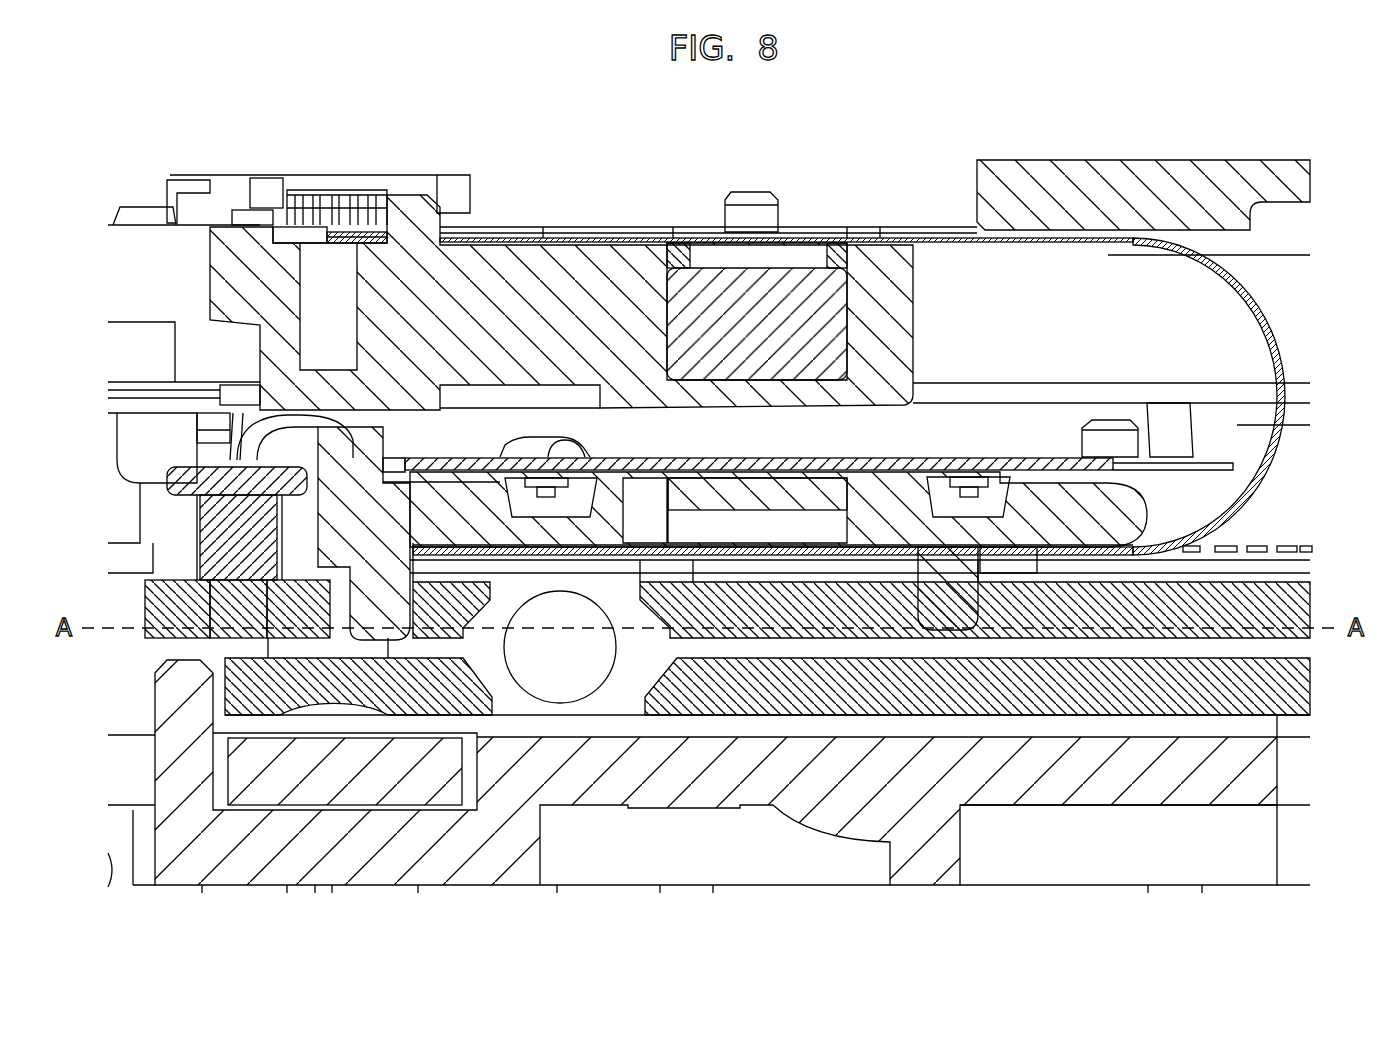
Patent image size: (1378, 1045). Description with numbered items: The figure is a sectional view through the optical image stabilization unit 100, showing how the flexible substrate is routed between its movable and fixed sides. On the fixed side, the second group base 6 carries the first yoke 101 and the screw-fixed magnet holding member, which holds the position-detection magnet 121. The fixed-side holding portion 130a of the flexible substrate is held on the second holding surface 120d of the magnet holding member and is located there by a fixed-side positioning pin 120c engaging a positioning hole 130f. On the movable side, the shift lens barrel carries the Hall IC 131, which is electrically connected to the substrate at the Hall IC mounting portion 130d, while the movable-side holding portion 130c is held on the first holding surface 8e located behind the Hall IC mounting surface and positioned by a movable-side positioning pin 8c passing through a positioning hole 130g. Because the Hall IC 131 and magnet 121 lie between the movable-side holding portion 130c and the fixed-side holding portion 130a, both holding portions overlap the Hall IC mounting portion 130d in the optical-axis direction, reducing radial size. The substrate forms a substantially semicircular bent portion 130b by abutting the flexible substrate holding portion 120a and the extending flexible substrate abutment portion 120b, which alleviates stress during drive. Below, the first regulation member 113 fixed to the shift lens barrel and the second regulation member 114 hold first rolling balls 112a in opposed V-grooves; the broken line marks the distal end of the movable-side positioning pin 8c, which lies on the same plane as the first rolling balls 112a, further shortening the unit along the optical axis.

The optical image stabilization unit 100 is at (135, 124).
The positioning hole 130f is at (355, 240).
The fixed-side positioning pin 120c is at (752, 200).
The fixed-side holding portion 130a is at (583, 238).
The second holding surface 120d is at (650, 240).
The magnet 121 is at (793, 278).
The flexible substrate holding portion 120a is at (905, 265).
The flexible substrate abutment portion 120b is at (1220, 240).
The bent portion 130b is at (1265, 305).
The Hall IC mounting portion 130d is at (960, 465).
The Hall IC 131 is at (687, 487).
The first regulation member 113 is at (1283, 608).
The second regulation member 114 is at (1283, 695).
The second group base 6 is at (222, 865).
The first yoke 101 is at (315, 790).
The movable-side positioning pin 8c is at (385, 608).
The positioning hole 130g is at (425, 560).
The first rolling ball 112a is at (565, 673).
The first holding surface 8e is at (700, 565).
The movable-side holding portion 130c is at (790, 560).